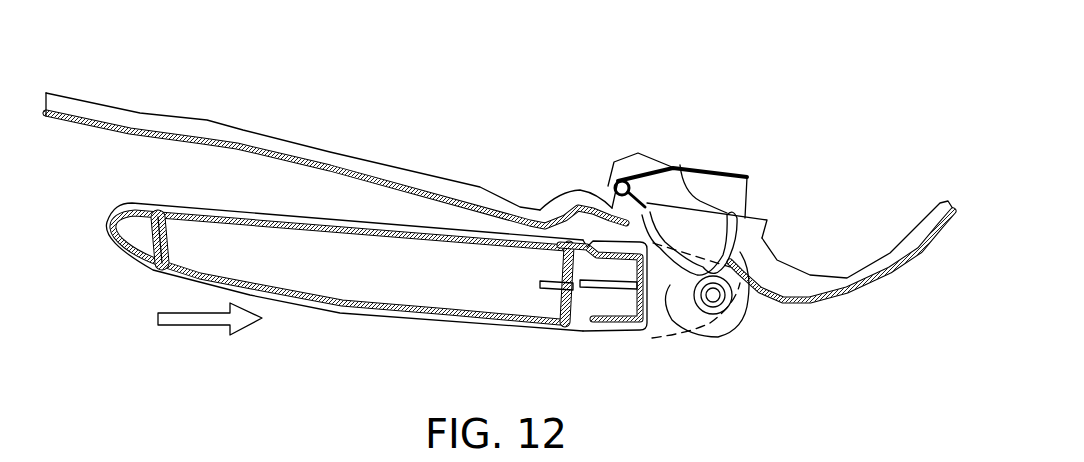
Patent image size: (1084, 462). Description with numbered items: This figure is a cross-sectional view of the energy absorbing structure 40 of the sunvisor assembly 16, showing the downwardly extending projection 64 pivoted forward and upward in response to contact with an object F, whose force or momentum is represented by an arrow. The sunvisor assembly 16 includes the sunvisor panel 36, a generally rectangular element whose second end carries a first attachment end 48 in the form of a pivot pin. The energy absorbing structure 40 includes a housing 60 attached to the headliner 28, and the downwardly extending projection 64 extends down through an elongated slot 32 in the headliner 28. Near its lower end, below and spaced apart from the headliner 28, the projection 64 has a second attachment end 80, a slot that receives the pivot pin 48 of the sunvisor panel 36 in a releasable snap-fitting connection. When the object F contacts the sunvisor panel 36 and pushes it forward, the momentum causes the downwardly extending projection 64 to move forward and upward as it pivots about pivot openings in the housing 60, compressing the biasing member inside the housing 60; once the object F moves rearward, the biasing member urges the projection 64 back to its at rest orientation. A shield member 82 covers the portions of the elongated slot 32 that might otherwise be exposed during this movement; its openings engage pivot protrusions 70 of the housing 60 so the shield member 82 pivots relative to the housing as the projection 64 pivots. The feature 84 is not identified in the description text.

The sunvisor assembly 16 is at (340, 343).
The headliner 28 is at (270, 150).
The elongated slot 32 is at (680, 165).
The sunvisor panel 36 is at (403, 310).
The energy absorbing structure 40 is at (650, 146).
The first attachment end 48 is at (680, 288).
The housing 60 is at (615, 180).
The downwardly extending projection 64 is at (735, 290).
The pivot protrusions 70 is at (622, 168).
The second attachment end 80 is at (711, 300).
The shield member 82 is at (715, 168).
The hump 84 is at (583, 197).
The object F is at (190, 327).